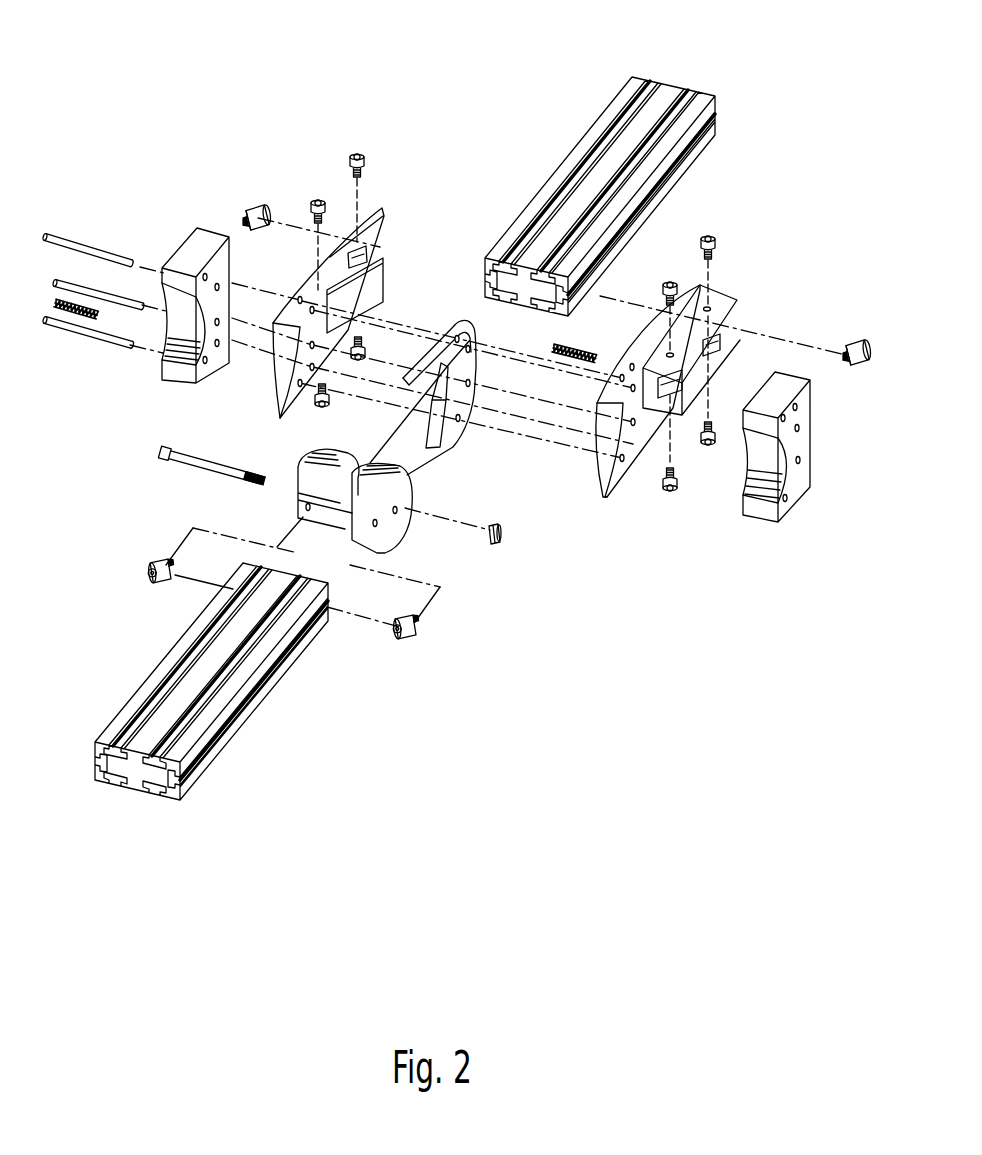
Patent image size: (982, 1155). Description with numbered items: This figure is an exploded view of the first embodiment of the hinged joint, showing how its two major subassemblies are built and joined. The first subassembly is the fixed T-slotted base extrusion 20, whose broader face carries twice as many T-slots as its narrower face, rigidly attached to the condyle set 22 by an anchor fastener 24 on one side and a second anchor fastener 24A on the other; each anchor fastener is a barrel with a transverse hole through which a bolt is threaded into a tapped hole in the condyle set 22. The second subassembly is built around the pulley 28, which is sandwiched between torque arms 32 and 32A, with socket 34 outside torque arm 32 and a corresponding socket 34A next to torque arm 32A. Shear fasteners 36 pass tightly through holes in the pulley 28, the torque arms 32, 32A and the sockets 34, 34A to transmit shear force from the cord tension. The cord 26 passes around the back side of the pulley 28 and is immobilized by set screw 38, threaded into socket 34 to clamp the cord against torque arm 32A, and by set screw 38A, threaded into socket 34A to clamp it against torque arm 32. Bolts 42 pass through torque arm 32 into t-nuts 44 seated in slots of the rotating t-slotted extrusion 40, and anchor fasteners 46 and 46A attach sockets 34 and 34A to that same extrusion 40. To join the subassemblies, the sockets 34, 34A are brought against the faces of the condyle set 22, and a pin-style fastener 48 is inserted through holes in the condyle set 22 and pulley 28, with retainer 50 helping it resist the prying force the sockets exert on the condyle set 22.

The T-slotted base extrusion 20 is at (297, 660).
The condyle set 22 is at (400, 523).
The anchor fastener 24 is at (417, 633).
The second anchor fastener 24A is at (150, 575).
The cord 26 is at (445, 330).
The pulley 28 is at (453, 435).
The torque arm 32 is at (632, 453).
The torque arm 32A is at (352, 237).
The socket 34 is at (757, 520).
The socket 34A is at (200, 248).
The shear fasteners 36 is at (125, 337).
The set screw 38 is at (587, 348).
The set screw 38A is at (78, 316).
The rotating t-slotted extrusion 40 is at (600, 128).
The bolts 42 is at (360, 153).
The t-nuts 44 is at (738, 332).
The anchor fastener 46 is at (856, 340).
The anchor fastener 46A is at (258, 203).
The pin-style fastener 48 is at (178, 460).
The retainer 50 is at (496, 544).